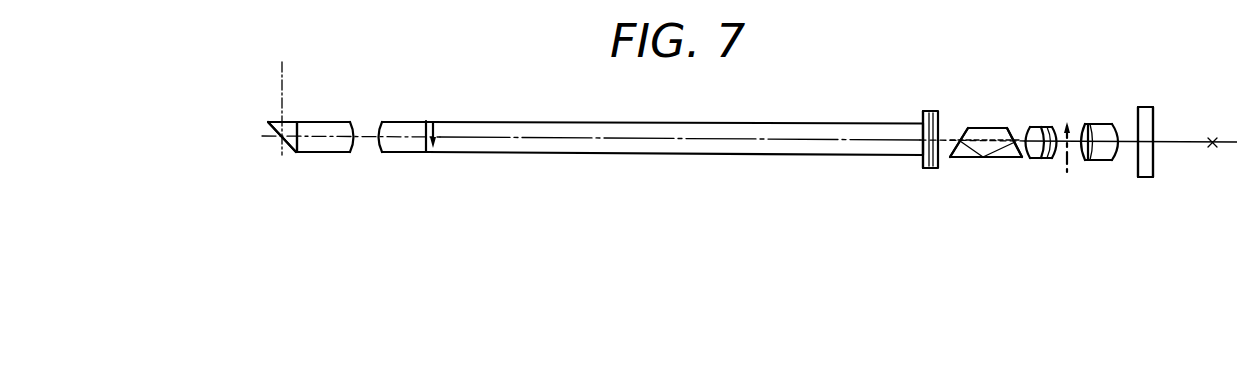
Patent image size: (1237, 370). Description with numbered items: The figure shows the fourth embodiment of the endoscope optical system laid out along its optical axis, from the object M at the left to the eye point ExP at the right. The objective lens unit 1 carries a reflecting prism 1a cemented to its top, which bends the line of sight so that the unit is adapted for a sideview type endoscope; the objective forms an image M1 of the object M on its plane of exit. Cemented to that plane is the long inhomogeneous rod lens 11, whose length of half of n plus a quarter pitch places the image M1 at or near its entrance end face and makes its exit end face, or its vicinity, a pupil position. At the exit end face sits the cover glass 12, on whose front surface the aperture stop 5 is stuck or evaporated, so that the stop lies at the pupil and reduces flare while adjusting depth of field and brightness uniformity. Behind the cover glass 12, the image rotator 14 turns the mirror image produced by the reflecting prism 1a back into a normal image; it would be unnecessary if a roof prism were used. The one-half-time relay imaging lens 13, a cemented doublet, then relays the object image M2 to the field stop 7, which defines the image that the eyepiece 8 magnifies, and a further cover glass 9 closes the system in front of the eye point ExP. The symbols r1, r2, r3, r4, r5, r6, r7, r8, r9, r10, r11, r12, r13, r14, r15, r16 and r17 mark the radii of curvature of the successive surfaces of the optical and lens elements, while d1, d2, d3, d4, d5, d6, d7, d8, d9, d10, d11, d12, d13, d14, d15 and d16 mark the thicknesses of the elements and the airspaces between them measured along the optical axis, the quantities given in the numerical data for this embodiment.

The objective lens unit 1 is at (322, 150).
The reflecting prism 1a is at (268, 124).
The inhomogeneous rod lens 11 is at (675, 165).
The aperture stop 5 is at (917, 131).
The cover glass 12 is at (936, 110).
The image rotator 14 is at (984, 140).
The imaging lens 13 is at (1033, 120).
The field stop 7 is at (1080, 134).
The eyepiece 8 is at (1112, 150).
The cover glass 9 is at (1171, 122).
The object M is at (267, 75).
The image M1 is at (435, 120).
The object image M2 is at (1080, 168).
The eye point ExP is at (1217, 129).
The radius of curvature r1 is at (277, 121).
The radius of curvature r2 is at (296, 121).
The radius of curvature r3 is at (353, 121).
The radius of curvature r4 is at (380, 121).
The radius of curvature r5 is at (426, 121).
The radius of curvature r6 is at (920, 130).
The radius of curvature r7 is at (923, 121).
The radius of curvature r8 is at (968, 127).
The radius of curvature r9 is at (1012, 127).
The radius of curvature r10 is at (1028, 126).
The radius of curvature r11 is at (1039, 126).
The radius of curvature r12 is at (1058, 126).
The radius of curvature r13 is at (1086, 125).
The radius of curvature r14 is at (1103, 124).
The radius of curvature r15 is at (1122, 130).
The radius of curvature r16 is at (1155, 130).
The radius of curvature r17 is at (1153, 148).
The thickness d1 is at (294, 146).
The thickness d2 is at (317, 137).
The thickness d3 is at (367, 138).
The thickness d4 is at (397, 173).
The thickness d5 is at (645, 167).
The thickness d6 is at (928, 163).
The thickness d7 is at (951, 158).
The thickness d8 is at (982, 157).
The thickness d9 is at (1015, 158).
The thickness d10 is at (1037, 158).
The thickness d11 is at (1053, 158).
The axial distance d12 is at (1069, 163).
The axial distance d13 is at (1090, 160).
The axial distance d14 is at (1107, 160).
The axial distance d15 is at (1132, 150).
The axial distance d16 is at (1153, 157).